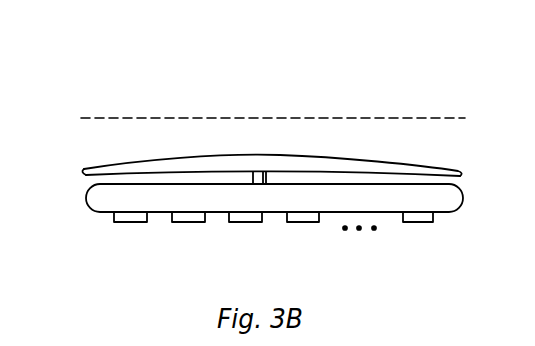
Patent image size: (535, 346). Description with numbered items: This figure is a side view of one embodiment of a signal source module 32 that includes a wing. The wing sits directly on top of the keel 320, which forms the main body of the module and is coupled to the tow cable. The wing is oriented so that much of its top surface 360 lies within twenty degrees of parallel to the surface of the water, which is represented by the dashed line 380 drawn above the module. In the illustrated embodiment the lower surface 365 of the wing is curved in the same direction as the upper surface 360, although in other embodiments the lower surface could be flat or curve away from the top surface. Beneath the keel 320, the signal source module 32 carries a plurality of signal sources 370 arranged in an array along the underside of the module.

The signal source module 32 is at (392, 59).
The keel 320 is at (88, 200).
The top surface 360 is at (271, 151).
The lower surface 365 is at (404, 173).
The signal sources 370 is at (237, 222).
The dashed line 380 is at (131, 117).